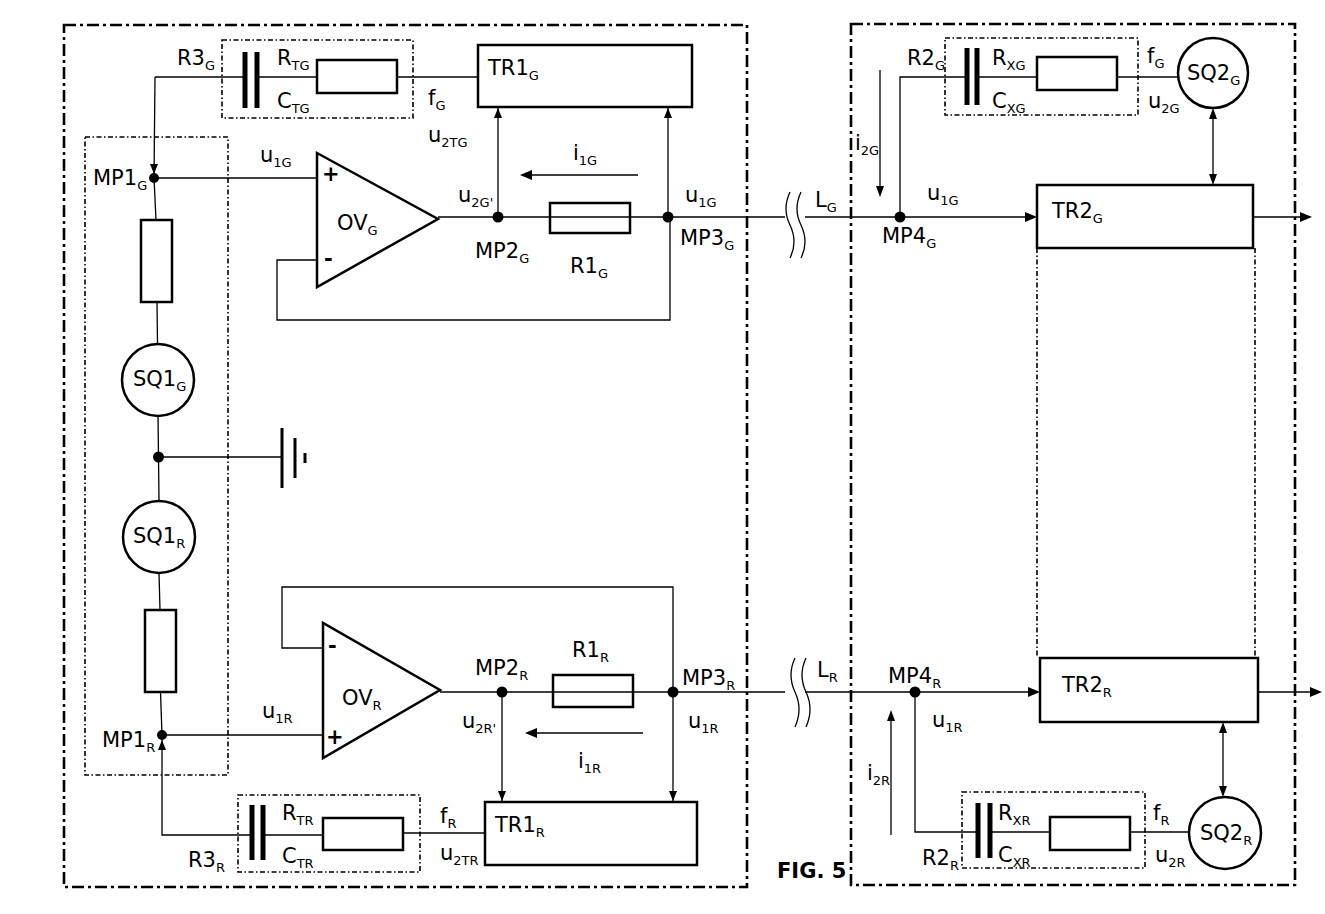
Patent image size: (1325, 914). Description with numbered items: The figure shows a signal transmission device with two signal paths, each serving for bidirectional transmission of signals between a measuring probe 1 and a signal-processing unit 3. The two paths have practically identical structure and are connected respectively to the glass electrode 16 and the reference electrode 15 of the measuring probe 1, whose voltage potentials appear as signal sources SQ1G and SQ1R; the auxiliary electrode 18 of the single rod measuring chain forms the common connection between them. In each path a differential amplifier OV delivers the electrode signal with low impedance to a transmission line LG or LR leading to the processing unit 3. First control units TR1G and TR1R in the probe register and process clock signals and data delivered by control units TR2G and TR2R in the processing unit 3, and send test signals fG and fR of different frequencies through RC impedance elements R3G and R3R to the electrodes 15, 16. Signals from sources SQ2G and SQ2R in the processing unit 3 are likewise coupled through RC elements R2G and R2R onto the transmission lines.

The measuring probe 1 is at (733, 873).
The signal-processing unit 3 is at (883, 872).
The reference electrode 15 is at (167, 720).
The glass electrode 16 is at (160, 198).
The auxiliary electrode 18 is at (180, 468).